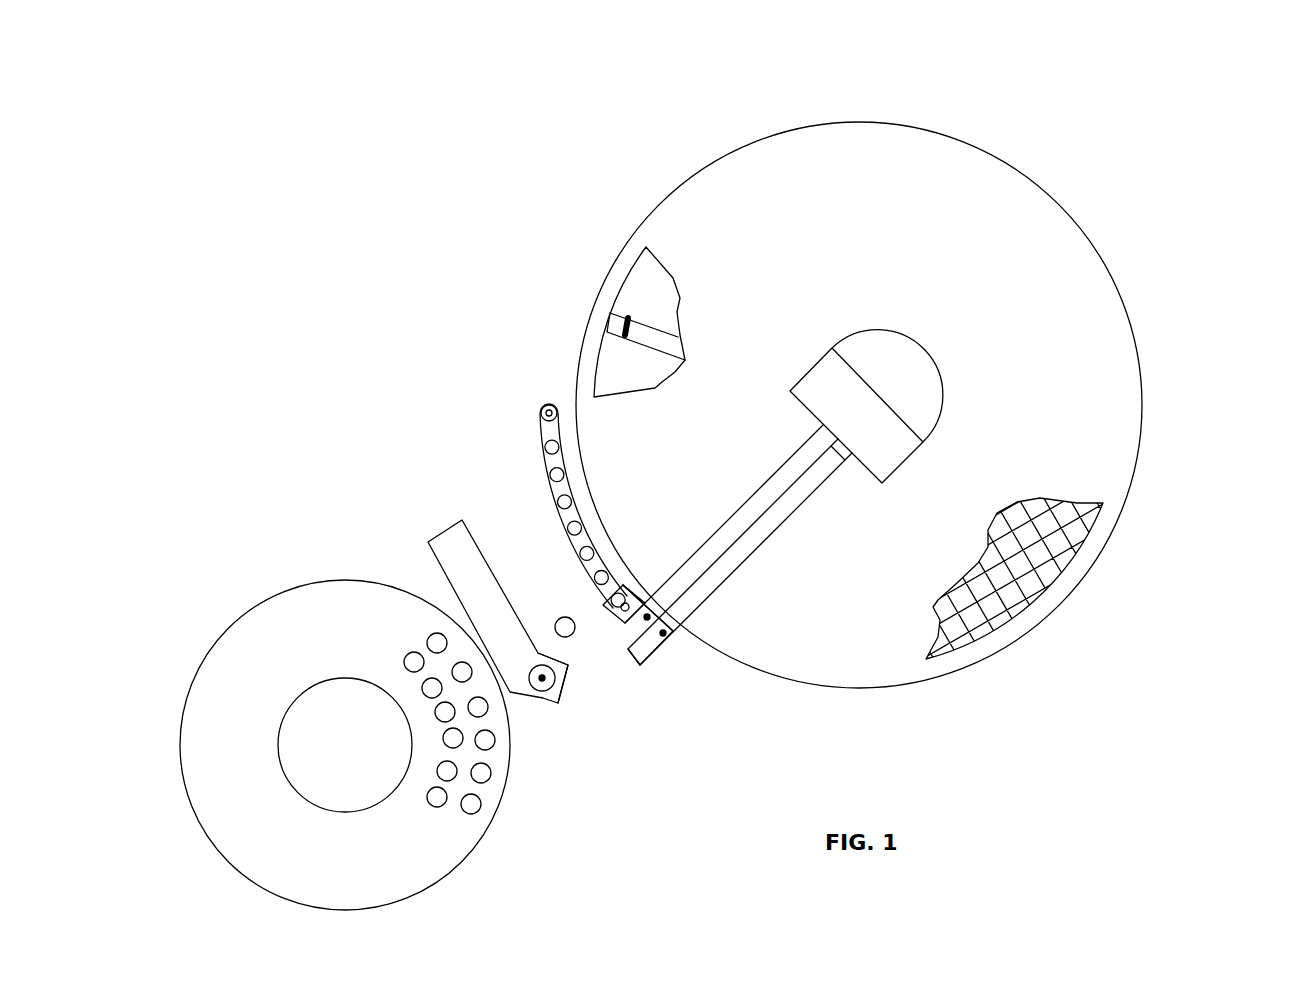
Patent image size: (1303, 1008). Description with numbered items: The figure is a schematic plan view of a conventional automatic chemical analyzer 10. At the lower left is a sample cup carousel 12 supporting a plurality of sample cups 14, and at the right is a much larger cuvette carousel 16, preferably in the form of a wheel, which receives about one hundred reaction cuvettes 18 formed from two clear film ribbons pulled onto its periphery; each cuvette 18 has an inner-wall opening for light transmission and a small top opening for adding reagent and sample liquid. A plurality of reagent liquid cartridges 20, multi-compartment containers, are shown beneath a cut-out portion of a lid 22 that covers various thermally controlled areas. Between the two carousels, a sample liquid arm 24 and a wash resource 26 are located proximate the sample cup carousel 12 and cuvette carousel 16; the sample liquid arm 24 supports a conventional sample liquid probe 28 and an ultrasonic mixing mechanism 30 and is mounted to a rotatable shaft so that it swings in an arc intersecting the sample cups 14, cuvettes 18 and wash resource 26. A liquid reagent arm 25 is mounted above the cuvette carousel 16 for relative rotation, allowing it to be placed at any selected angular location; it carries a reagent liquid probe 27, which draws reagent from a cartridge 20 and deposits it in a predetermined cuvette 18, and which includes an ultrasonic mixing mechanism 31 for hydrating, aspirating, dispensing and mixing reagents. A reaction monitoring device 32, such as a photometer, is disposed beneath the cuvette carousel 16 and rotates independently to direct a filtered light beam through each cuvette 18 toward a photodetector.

The automatic chemical analyzer 10 is at (347, 120).
The sample cup carousel 12 is at (271, 840).
The sample cups 14 is at (385, 641).
The cuvette carousel 16 is at (1100, 625).
The cuvettes 18 is at (545, 408).
The reagent liquid cartridges 20 is at (1053, 522).
The lid 22 is at (1040, 372).
The sample liquid arm 24 is at (468, 567).
The liquid reagent arm 25 is at (770, 497).
The wash resource 26 is at (575, 632).
The reagent liquid probe 27 is at (615, 605).
The sample liquid probe 28 is at (558, 700).
The ultrasonic mixing mechanism 30 is at (545, 678).
The ultrasonic mixing mechanism 31 is at (635, 585).
The reaction monitoring device 32 is at (643, 332).